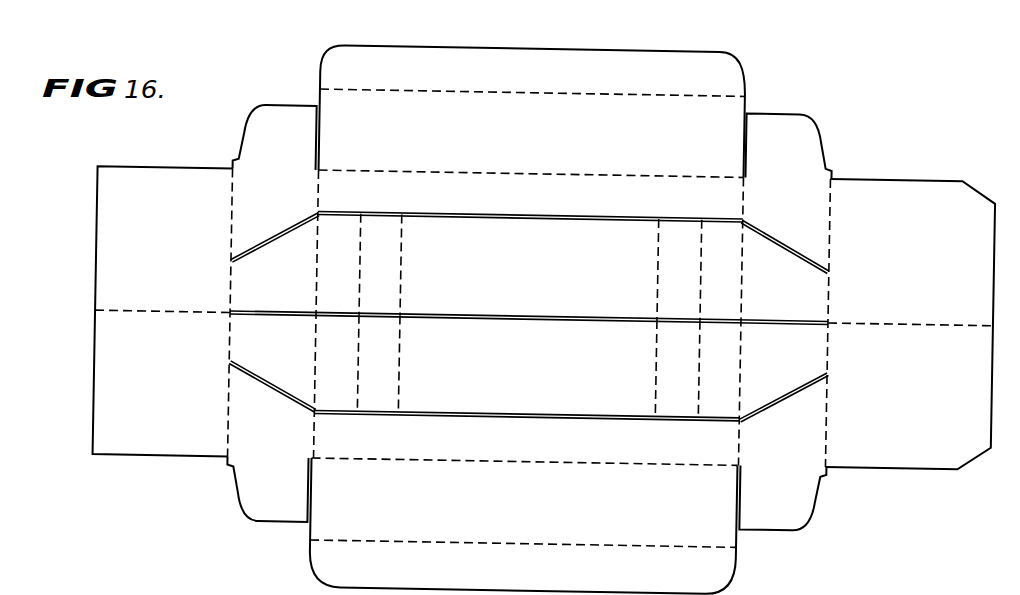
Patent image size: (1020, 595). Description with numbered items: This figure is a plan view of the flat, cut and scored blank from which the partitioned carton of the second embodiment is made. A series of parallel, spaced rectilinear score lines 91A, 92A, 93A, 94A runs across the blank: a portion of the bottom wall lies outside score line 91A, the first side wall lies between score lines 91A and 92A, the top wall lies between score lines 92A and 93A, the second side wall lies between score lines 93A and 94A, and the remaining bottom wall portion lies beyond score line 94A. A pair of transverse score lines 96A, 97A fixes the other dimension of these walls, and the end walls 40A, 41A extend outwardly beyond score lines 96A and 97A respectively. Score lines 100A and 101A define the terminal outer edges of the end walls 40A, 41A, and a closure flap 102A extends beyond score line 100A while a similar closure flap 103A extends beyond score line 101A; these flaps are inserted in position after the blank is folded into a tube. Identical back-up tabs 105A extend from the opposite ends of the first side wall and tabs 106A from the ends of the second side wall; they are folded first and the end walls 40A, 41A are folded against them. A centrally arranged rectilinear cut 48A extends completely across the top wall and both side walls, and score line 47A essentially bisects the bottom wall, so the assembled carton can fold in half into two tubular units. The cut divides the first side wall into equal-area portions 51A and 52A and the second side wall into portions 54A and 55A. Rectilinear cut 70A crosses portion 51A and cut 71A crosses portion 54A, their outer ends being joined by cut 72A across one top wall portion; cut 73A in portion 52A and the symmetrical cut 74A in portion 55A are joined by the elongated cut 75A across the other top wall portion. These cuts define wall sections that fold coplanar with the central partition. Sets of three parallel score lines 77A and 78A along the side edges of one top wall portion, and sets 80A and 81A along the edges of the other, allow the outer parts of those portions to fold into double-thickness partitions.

The score line 47A is at (133, 312).
The score line 91A is at (230, 198).
The score line 92A is at (317, 186).
The score line 93A is at (740, 193).
The score line 94A is at (832, 195).
The closure flap 103A is at (729, 76).
The closure flap 102A is at (718, 578).
The score line 101A is at (567, 94).
The score line 100A is at (560, 546).
The score line 97A is at (567, 174).
The score line 96A is at (571, 462).
The end wall 41A is at (548, 138).
The end wall 40A is at (536, 507).
The back-up tab 105A is at (273, 118).
The back-up tab 106A is at (800, 134).
The cut 75A is at (500, 216).
The cut 72A is at (470, 414).
The cut 48A is at (535, 314).
The cut 73A is at (240, 262).
The cut 70A is at (247, 378).
The cut 74A is at (812, 257).
The cut 71A is at (795, 394).
The score lines 80A is at (359, 249).
The score lines 77A is at (357, 362).
The score lines 81A is at (743, 250).
The score lines 78A is at (743, 348).
The side wall portion 52A is at (290, 214).
The side wall portion 51A is at (293, 359).
The side wall portion 55A is at (810, 219).
The side wall portion 54A is at (804, 367).